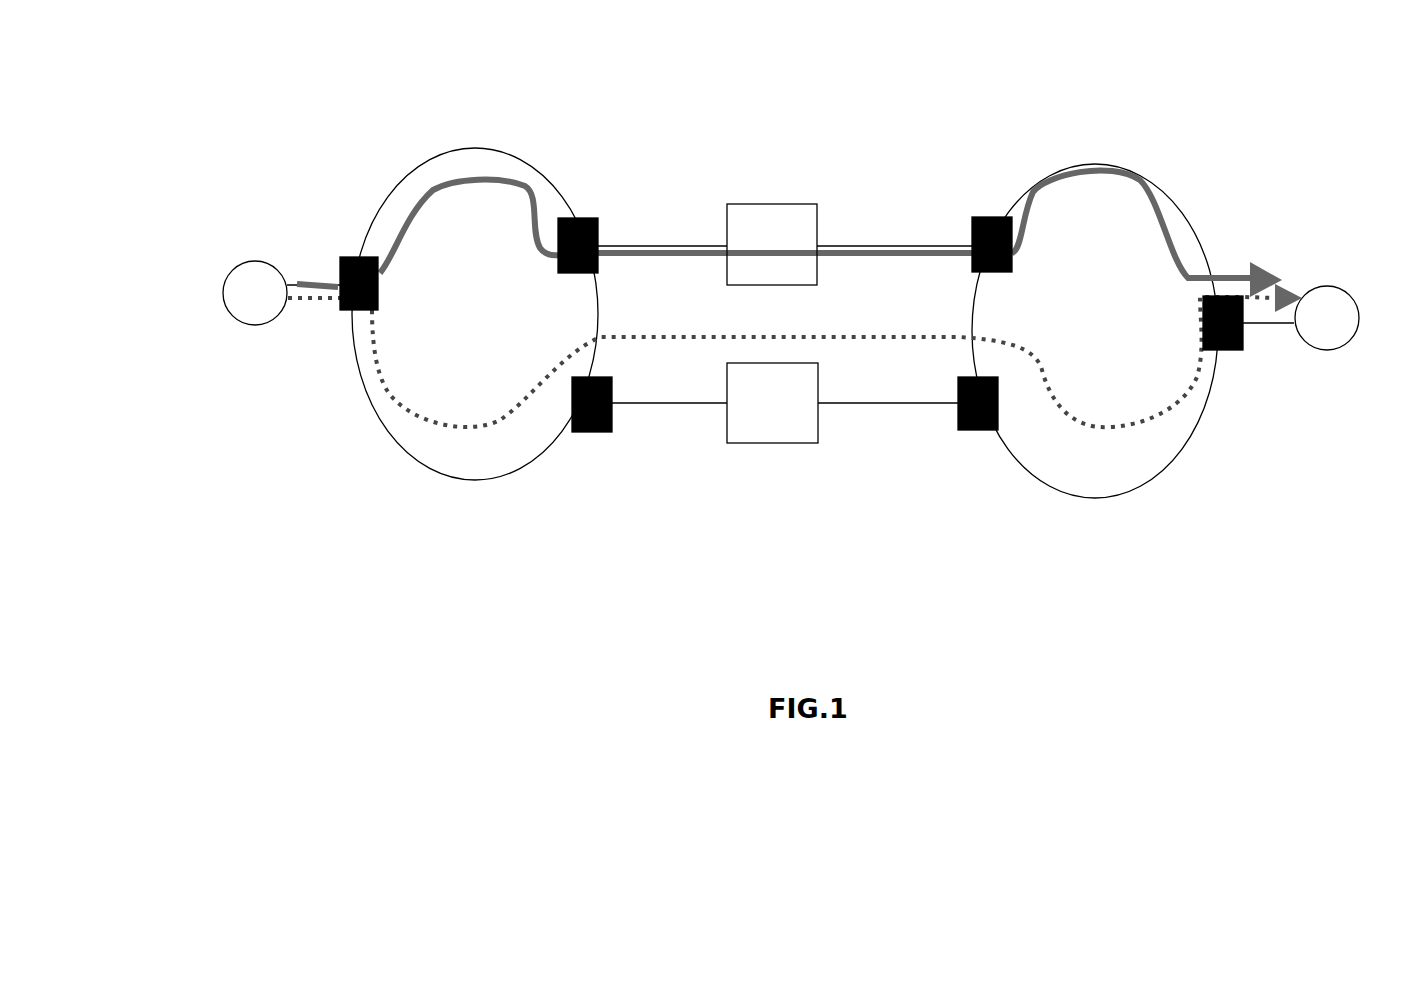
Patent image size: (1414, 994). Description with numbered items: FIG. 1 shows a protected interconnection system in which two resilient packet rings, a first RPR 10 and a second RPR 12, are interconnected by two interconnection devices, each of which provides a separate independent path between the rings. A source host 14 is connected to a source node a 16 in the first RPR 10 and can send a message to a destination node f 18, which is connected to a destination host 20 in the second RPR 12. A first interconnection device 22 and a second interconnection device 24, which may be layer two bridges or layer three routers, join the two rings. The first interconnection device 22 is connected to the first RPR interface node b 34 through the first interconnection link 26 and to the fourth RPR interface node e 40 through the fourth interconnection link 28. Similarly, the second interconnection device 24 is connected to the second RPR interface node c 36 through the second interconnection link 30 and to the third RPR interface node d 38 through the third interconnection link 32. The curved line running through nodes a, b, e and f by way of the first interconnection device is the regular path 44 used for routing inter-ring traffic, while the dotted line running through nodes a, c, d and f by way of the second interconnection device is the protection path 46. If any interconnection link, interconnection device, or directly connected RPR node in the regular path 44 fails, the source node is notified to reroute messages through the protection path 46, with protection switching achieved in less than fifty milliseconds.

The first RPR R1 10 is at (387, 430).
The second RPR R2 12 is at (1140, 487).
The source host 14 is at (265, 323).
The source node a 16 is at (350, 257).
The destination node f 18 is at (1225, 350).
The destination host 20 is at (1327, 350).
The first interconnection device S1 22 is at (772, 204).
The second interconnection device S2 24 is at (760, 443).
The first interconnection link S1-b 26 is at (631, 244).
The fourth interconnection link S1-e 28 is at (905, 250).
The second interconnection link S2-c 30 is at (641, 403).
The third interconnection link S2-d 32 is at (903, 403).
The first RPR interface node b 34 is at (590, 218).
The second RPR interface node c 36 is at (578, 432).
The third RPR interface node d 38 is at (975, 430).
The fourth RPR interface node e 40 is at (1005, 217).
The regular path 44 is at (1213, 293).
The protection path 46 is at (508, 415).